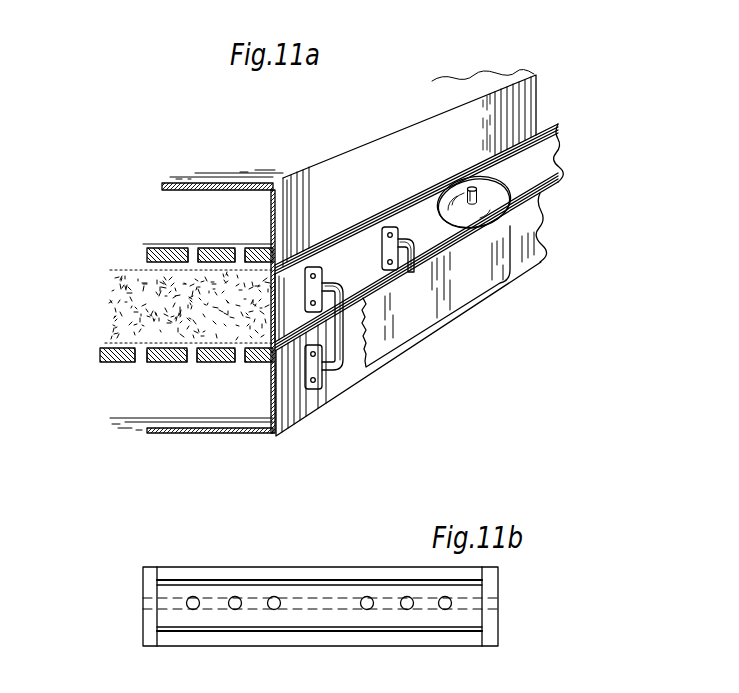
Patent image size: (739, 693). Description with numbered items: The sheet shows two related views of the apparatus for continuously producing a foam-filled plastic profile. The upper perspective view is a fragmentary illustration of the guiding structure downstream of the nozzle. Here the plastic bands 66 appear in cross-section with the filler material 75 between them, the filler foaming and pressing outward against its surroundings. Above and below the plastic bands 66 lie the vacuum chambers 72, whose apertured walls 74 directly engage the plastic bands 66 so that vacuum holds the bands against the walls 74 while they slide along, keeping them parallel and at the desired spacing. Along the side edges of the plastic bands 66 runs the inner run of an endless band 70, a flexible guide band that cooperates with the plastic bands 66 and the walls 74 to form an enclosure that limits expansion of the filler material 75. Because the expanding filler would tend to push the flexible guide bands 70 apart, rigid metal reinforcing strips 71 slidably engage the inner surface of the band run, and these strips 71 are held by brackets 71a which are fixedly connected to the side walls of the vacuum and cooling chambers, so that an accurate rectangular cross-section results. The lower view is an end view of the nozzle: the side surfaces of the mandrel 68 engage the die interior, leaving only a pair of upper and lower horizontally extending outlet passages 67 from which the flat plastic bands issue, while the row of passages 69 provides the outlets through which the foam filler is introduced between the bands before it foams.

In FIG. 11a, the vacuum chamber 72 is at (212, 202).
In FIG. 11a, the plastic band 66 is at (207, 270).
In FIG. 11a, the filler material 75 is at (213, 327).
In FIG. 11a, the wall 74 is at (168, 362).
In FIG. 11a, the endless band 70 is at (427, 203).
In FIG. 11a, the reinforcing strip 71 is at (348, 252).
In FIG. 11a, the bracket 71a is at (340, 365).
In FIG. 11b, the outlet passage 67 is at (173, 580).
In FIG. 11b, the mandrel 68 is at (329, 611).
In FIG. 11b, the passage 69 is at (367, 610).